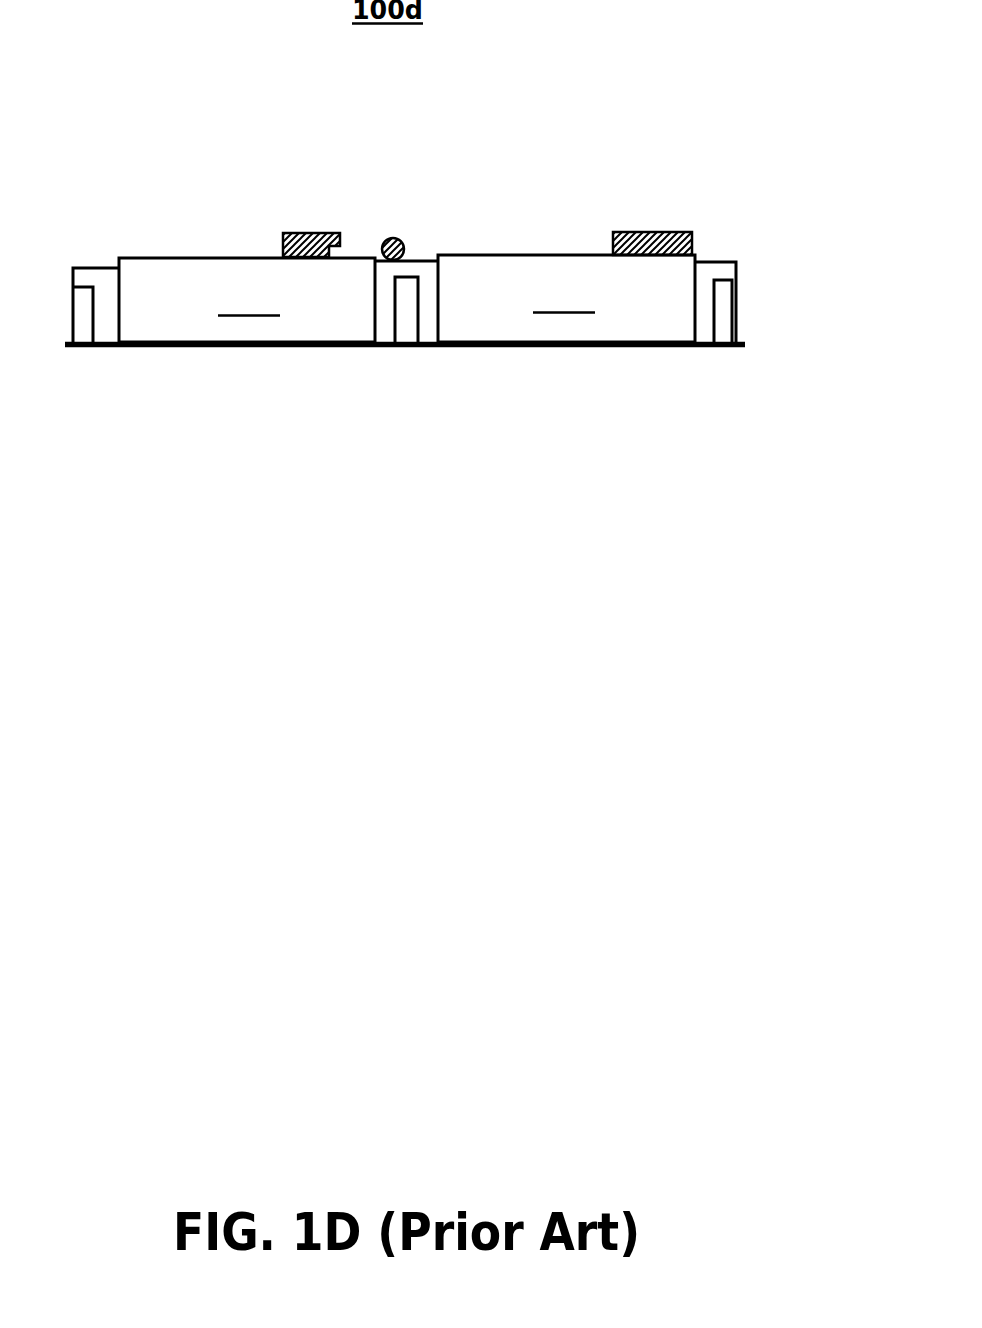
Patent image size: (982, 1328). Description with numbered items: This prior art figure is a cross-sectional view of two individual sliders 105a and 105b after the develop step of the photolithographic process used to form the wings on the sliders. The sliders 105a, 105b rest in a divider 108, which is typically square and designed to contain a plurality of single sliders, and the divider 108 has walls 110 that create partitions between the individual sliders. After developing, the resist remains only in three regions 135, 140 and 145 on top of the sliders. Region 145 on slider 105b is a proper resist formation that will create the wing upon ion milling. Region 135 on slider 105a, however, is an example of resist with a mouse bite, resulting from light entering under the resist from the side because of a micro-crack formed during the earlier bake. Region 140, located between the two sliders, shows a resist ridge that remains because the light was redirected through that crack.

The slider 105a is at (247, 300).
The slider 105b is at (566, 298).
The divider 108 is at (157, 348).
The divider wall 110 is at (736, 307).
The region 135 is at (303, 233).
The region 140 is at (370, 245).
The region 145 is at (658, 232).